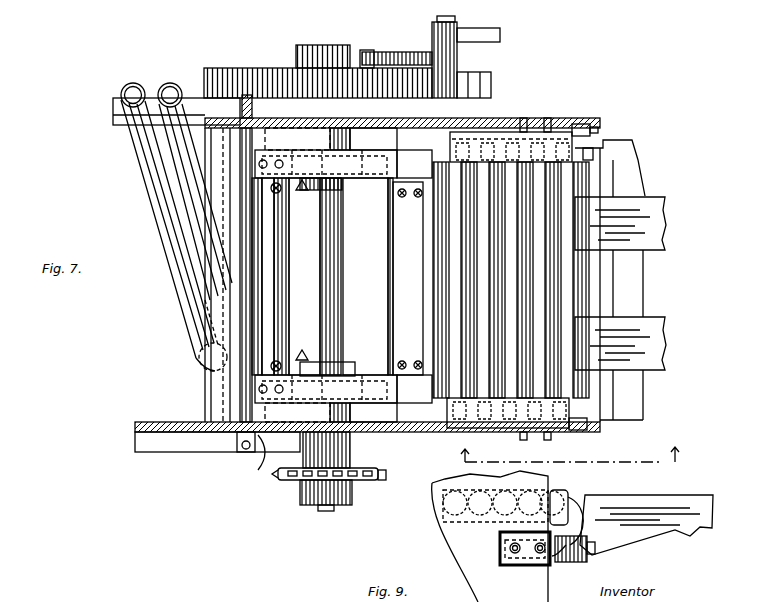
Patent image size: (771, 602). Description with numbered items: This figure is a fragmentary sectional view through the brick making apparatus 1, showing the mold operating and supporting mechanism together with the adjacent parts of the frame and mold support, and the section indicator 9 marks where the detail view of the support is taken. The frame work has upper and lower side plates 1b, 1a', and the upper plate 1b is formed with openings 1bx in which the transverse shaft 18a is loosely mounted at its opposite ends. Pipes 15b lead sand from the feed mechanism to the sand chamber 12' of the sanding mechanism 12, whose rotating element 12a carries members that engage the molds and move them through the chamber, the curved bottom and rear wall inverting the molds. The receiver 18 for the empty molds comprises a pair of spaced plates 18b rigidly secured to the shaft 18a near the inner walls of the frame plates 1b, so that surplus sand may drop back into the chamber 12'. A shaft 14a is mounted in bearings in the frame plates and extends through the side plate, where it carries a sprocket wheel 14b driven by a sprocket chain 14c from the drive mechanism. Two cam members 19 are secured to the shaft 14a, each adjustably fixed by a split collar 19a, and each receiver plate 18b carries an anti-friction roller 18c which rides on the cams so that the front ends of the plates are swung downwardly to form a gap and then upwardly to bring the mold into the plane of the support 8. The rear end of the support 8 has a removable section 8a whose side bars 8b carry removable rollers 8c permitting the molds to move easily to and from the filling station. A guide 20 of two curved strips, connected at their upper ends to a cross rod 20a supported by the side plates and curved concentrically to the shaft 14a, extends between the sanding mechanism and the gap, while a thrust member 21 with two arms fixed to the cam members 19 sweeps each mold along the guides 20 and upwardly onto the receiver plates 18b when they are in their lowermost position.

In FIG. 7, the brick making apparatus 1 is at (510, 96).
In FIG. 7, the openings in side plates 1bx is at (258, 121).
In FIG. 7, the lower side plate 1a' is at (367, 451).
In FIG. 7, the upper side plate 1b is at (398, 128).
In FIG. 9, the upper side plate 1b is at (528, 548).
In FIG. 7, the pipes 15b is at (172, 84).
In FIG. 7, the cam member 19 is at (306, 148).
In FIG. 7, the receiver 18 is at (377, 148).
In FIG. 7, the transverse shaft 18a is at (258, 296).
In FIG. 7, the receiver plates 18b is at (403, 168).
In FIG. 7, the anti-friction roller 18c is at (362, 166).
In FIG. 7, the split collar 19a is at (308, 196).
In FIG. 7, the sanding mechanism 12 is at (365, 276).
In FIG. 7, the sand chamber 12' is at (304, 276).
In FIG. 7, the rotating element 12a is at (375, 192).
In FIG. 7, the shaft 14a is at (342, 291).
In FIG. 7, the sprocket wheel 14b is at (280, 483).
In FIG. 7, the sprocket chain 14c is at (380, 483).
In FIG. 7, the guide 20 is at (422, 134).
In FIG. 7, the cross rod 20a is at (442, 318).
In FIG. 7, the thrust member 21 is at (354, 212).
In FIG. 7, the support 8 is at (617, 280).
In FIG. 9, the support 8 is at (645, 497).
In FIG. 7, the removable section 8a is at (568, 288).
In FIG. 9, the removable section 8a is at (580, 498).
In FIG. 7, the side bars 8b is at (496, 135).
In FIG. 9, the side bars 8b is at (498, 518).
In FIG. 7, the removable rollers 8c is at (563, 395).
In FIG. 9, the removable rollers 8c is at (557, 489).
In FIG. 7, the section line 9 is at (569, 456).